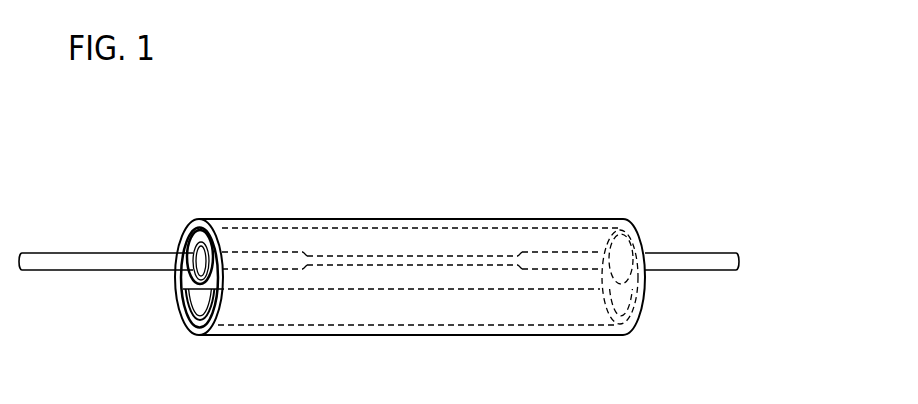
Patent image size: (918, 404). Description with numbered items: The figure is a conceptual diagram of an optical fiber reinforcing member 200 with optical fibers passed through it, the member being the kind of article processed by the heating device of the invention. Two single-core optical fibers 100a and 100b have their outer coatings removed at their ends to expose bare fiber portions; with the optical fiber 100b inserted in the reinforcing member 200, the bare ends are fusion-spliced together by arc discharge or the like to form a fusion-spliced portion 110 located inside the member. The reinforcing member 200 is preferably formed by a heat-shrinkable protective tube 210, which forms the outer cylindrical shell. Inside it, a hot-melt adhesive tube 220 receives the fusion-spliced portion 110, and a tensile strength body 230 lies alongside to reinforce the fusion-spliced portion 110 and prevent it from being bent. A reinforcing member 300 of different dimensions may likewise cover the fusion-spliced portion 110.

The single-core optical fiber 100a is at (70, 253).
The single-core optical fiber 100b is at (688, 253).
The fusion-spliced portion 110 is at (408, 256).
The reinforcing member 200 is at (410, 229).
The reinforcing member 300 is at (410, 229).
The heat-shrinkable protective tube 210 is at (492, 220).
The hot-melt adhesive tube 220 is at (197, 240).
The tensile strength body 230 is at (197, 313).